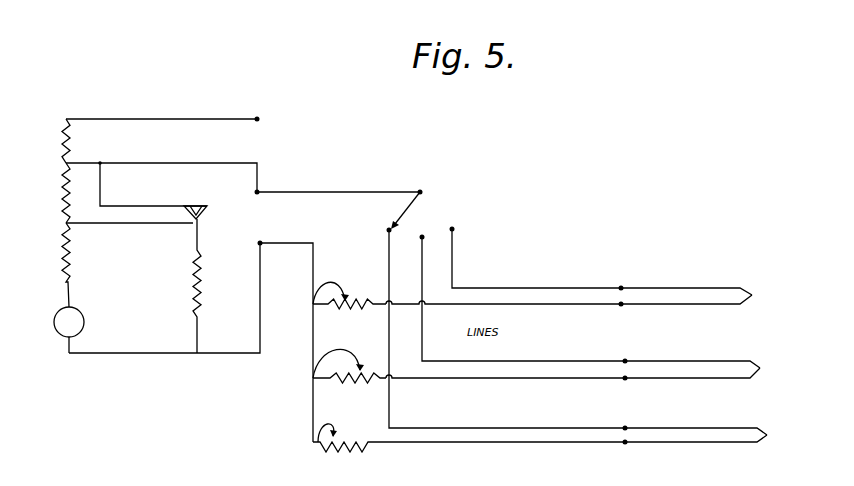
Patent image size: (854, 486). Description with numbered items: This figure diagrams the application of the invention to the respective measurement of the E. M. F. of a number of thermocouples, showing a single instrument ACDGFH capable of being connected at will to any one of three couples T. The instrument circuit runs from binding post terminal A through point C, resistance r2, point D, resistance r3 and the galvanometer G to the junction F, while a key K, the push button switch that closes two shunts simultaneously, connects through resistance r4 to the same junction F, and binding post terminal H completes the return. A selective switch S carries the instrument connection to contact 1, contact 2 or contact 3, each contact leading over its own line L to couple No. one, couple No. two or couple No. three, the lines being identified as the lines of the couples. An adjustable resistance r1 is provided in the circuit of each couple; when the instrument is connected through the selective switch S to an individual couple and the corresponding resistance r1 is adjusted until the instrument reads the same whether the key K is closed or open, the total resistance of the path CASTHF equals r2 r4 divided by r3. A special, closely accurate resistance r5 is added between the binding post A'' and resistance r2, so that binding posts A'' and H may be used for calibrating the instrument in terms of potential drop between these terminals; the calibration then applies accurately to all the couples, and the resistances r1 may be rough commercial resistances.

The binding post A'' is at (166, 107).
The binding post terminal A is at (338, 184).
The junction of instrument circuit C is at (161, 173).
The junction of instrument circuit D is at (110, 224).
The junction of instrument circuit F is at (164, 309).
The galvanometer G is at (69, 330).
The binding post terminal H is at (286, 342).
The push button switch K is at (195, 200).
The selective switch S is at (417, 201).
The thermocouple T is at (711, 355).
The line L is at (584, 357).
The adjustable resistance r1 is at (540, 365).
The resistance r2 is at (49, 193).
The resistance r3 is at (48, 265).
The resistance r4 is at (184, 286).
The special accurate resistance r5 is at (48, 141).
The switch contact for couple No. 1 is at (601, 253).
The switch contact for couple No. 2 is at (586, 291).
The switch contact for couple No. 3 is at (564, 329).